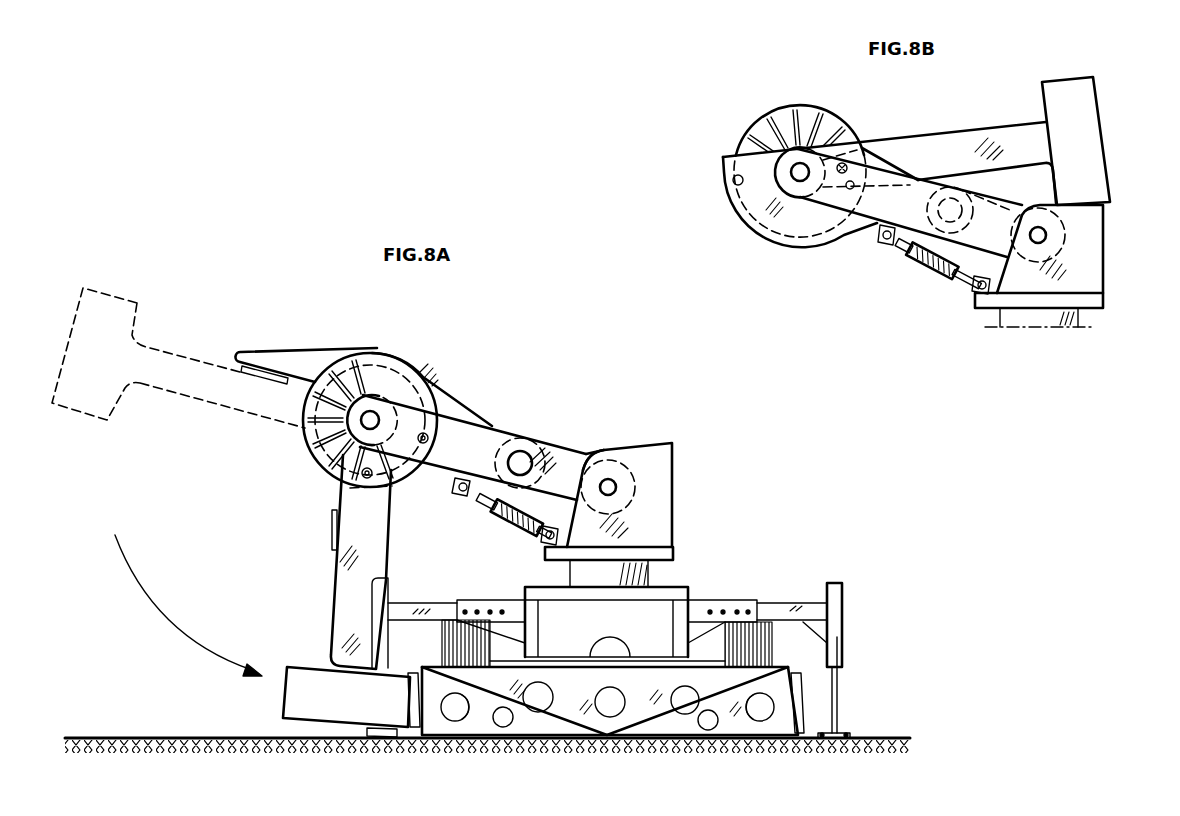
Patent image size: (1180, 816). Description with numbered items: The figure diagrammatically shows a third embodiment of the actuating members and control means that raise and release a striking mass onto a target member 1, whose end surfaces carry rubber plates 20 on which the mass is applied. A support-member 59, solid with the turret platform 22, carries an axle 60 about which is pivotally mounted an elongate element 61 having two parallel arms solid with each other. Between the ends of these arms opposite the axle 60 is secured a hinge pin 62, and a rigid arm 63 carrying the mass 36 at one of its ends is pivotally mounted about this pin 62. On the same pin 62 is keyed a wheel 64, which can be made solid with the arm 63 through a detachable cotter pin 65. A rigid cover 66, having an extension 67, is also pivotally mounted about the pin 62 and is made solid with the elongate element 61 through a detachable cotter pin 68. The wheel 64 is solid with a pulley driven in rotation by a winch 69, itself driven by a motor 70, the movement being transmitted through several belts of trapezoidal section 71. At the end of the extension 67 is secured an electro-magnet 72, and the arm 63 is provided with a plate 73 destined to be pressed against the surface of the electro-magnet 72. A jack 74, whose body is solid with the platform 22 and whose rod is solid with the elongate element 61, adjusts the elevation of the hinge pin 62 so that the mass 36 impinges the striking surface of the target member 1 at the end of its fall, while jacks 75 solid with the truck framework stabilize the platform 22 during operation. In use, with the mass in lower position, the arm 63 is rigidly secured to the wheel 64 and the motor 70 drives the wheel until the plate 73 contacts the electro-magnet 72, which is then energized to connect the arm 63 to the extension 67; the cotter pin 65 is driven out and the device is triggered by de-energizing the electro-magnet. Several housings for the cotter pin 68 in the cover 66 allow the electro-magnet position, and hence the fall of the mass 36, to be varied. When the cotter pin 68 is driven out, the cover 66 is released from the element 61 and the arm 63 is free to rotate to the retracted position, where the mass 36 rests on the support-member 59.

In FIG. 8A, the target member 1 is at (787, 661).
In FIG. 8A, the rubber plates 20 is at (410, 680).
In FIG. 8A, the platform 22 is at (667, 552).
In FIG. 8A, the mass 36 is at (285, 698).
In FIG. 8B, the mass 36 is at (1093, 130).
In FIG. 8A, the support-member 59 is at (675, 503).
In FIG. 8B, the support-member 59 is at (1097, 253).
In FIG. 8A, the axle 60 is at (612, 478).
In FIG. 8A, the elongate element 61 is at (578, 462).
In FIG. 8A, the hinge pin 62 is at (372, 421).
In FIG. 8B, the hinge pin 62 is at (800, 172).
In FIG. 8A, the rigid arm 63 is at (330, 577).
In FIG. 8B, the rigid arm 63 is at (982, 130).
In FIG. 8A, the wheel 64 is at (318, 453).
In FIG. 8B, the wheel 64 is at (770, 122).
In FIG. 8A, the detachable cotter pin 65 is at (360, 475).
In FIG. 8A, the rigid cover 66 is at (373, 350).
In FIG. 8B, the rigid cover 66 is at (753, 232).
In FIG. 8A, the extension 67 is at (292, 357).
In FIG. 8A, the detachable cotter pin 68 is at (422, 444).
In FIG. 8A, the winch 69 is at (530, 460).
In FIG. 8A, the motor 70 is at (523, 437).
In FIG. 8A, the belts of trapezoidal section 71 is at (467, 411).
In FIG. 8B, the belts of trapezoidal section 71 is at (908, 202).
In FIG. 8A, the electro-magnet 72 is at (247, 377).
In FIG. 8A, the plate 73 is at (332, 532).
In FIG. 8A, the jack 74 is at (497, 508).
In FIG. 8B, the jack 74 is at (928, 268).
In FIG. 8A, the jacks 75 is at (842, 615).